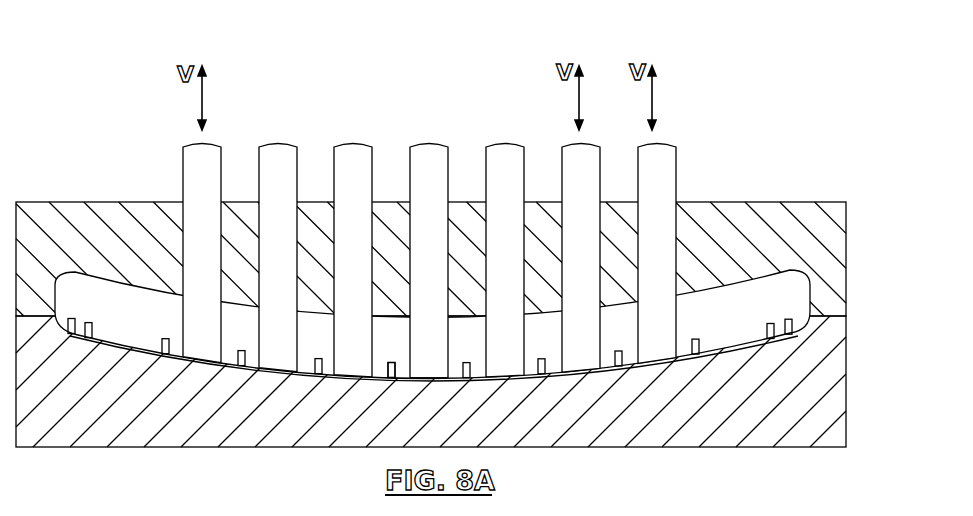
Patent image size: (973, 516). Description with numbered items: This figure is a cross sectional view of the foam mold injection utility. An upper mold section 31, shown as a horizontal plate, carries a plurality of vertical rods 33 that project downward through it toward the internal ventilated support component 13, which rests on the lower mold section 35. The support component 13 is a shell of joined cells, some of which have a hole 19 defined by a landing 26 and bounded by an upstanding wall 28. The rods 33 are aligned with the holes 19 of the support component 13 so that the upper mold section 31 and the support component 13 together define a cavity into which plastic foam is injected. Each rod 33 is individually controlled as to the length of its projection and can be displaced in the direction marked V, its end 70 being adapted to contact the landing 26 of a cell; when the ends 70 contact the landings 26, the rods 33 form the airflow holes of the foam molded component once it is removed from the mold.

The internal ventilated support component 13 is at (790, 333).
The hole 19 is at (430, 378).
The landing 26 is at (376, 380).
The upstanding wall 28 is at (245, 356).
The upper mold section 31 is at (846, 276).
The rods 33 is at (580, 150).
The lower mold section 35 is at (846, 403).
The end of rod 70 is at (580, 370).